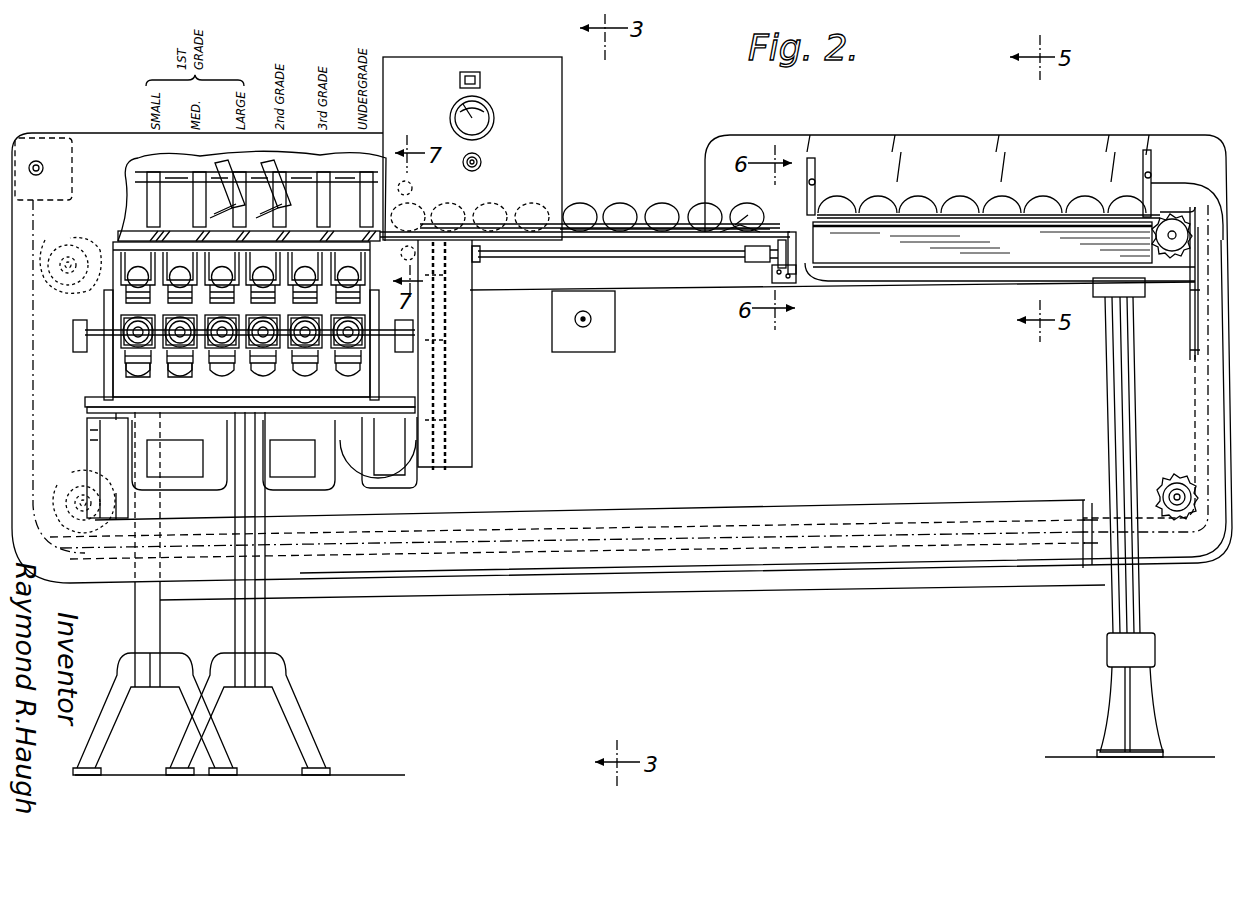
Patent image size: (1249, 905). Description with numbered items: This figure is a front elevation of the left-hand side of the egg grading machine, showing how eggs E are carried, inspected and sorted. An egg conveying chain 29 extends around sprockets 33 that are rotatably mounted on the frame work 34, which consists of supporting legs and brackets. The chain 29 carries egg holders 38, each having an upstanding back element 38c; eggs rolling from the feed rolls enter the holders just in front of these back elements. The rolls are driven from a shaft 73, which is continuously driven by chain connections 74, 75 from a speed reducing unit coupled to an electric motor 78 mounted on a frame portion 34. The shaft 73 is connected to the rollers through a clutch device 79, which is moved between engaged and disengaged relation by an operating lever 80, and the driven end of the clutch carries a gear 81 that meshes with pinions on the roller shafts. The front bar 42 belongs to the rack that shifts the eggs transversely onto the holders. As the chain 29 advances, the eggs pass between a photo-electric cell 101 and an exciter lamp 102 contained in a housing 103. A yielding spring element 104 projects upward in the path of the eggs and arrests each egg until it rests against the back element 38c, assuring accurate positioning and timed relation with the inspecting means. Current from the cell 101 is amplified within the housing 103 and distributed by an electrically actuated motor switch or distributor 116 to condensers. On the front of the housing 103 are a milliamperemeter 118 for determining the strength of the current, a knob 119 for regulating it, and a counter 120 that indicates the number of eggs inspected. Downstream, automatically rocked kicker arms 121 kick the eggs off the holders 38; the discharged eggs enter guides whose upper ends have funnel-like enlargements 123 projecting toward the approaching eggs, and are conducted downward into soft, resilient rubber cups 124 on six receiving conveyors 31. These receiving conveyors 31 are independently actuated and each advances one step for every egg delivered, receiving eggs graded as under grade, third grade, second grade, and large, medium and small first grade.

The egg conveying chain 29 is at (1195, 398).
The receiving conveyors 31 is at (262, 386).
The sprockets 33 is at (78, 288).
The frame work 34 is at (245, 615).
The egg holders 38 is at (1190, 336).
The upstanding back elements 38c is at (740, 200).
The front bar 42 is at (940, 205).
The shaft 73 is at (688, 262).
The chain connection 74 is at (445, 300).
The chain connection 75 is at (440, 392).
The electric motor 78 is at (405, 490).
The clutch device 79 is at (796, 280).
The operating lever 80 is at (778, 264).
The gear 81 is at (845, 276).
The photo-electric cell 101 is at (412, 187).
The exciter lamp 102 is at (414, 256).
The housing 103 is at (560, 120).
The spring element 104 is at (648, 200).
The motor switch or distributor 116 is at (815, 180).
The milliamperemeter 118 is at (490, 125).
The knob 119 is at (481, 164).
The counter 120 is at (475, 72).
The kicker arms 121 is at (280, 205).
The funnel-like enlargements 123 is at (128, 233).
The rubber cups 124 is at (196, 386).
The eggs E is at (588, 200).